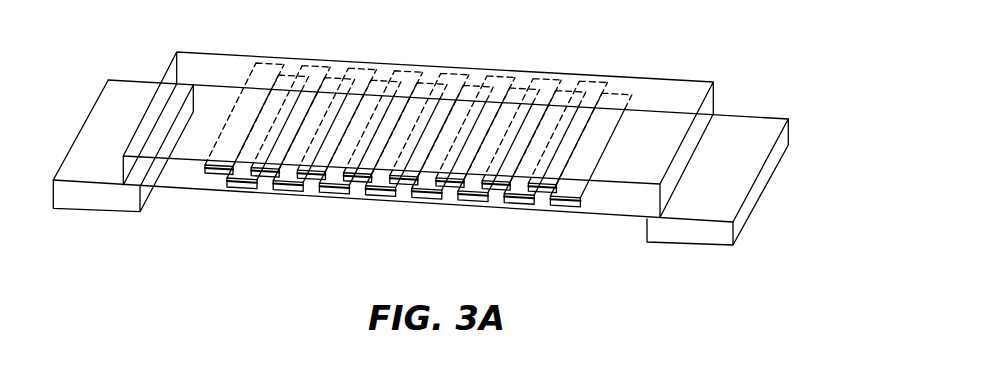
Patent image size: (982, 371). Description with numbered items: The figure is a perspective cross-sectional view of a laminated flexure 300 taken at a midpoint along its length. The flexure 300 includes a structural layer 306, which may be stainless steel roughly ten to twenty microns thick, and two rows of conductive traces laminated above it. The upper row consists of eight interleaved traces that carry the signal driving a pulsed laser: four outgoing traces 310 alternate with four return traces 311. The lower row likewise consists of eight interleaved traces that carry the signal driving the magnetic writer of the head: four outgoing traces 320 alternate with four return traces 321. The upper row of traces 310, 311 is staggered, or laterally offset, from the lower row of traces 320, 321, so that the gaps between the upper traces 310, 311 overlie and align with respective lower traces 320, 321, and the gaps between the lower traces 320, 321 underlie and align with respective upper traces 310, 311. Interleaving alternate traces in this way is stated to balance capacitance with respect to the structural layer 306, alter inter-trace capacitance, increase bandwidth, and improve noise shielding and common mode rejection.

The laminated flexure 300 is at (749, 281).
The structural layer 306 is at (693, 232).
The outgoing traces 310 is at (265, 167).
The return traces 311 is at (228, 163).
The outgoing traces 320 is at (288, 191).
The return traces 321 is at (242, 188).